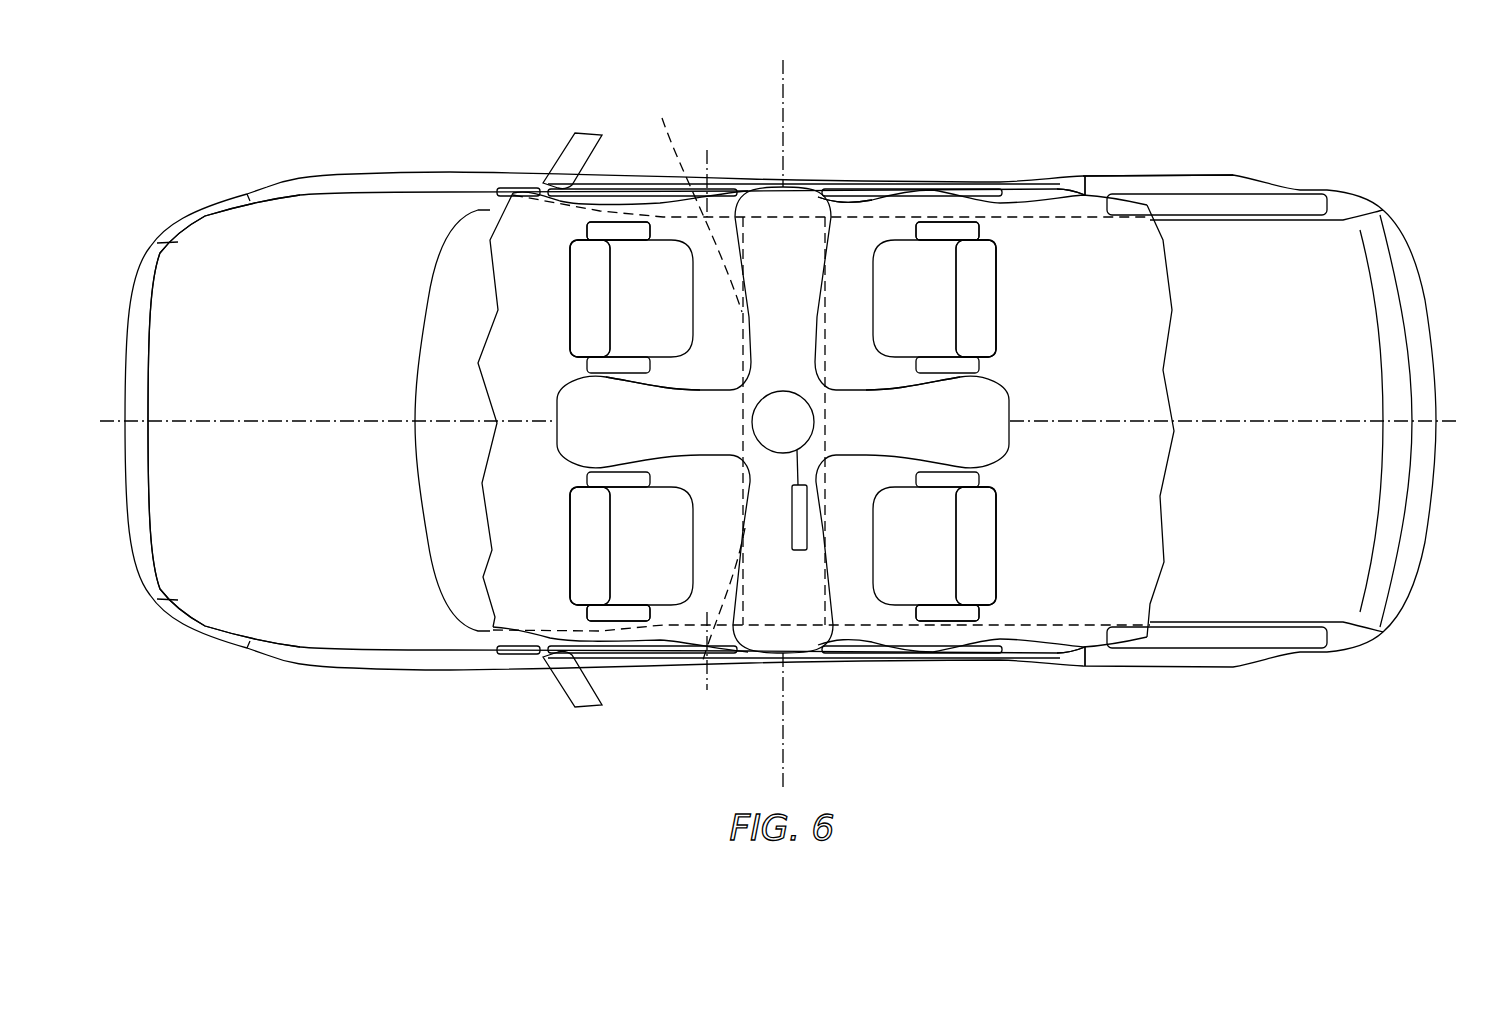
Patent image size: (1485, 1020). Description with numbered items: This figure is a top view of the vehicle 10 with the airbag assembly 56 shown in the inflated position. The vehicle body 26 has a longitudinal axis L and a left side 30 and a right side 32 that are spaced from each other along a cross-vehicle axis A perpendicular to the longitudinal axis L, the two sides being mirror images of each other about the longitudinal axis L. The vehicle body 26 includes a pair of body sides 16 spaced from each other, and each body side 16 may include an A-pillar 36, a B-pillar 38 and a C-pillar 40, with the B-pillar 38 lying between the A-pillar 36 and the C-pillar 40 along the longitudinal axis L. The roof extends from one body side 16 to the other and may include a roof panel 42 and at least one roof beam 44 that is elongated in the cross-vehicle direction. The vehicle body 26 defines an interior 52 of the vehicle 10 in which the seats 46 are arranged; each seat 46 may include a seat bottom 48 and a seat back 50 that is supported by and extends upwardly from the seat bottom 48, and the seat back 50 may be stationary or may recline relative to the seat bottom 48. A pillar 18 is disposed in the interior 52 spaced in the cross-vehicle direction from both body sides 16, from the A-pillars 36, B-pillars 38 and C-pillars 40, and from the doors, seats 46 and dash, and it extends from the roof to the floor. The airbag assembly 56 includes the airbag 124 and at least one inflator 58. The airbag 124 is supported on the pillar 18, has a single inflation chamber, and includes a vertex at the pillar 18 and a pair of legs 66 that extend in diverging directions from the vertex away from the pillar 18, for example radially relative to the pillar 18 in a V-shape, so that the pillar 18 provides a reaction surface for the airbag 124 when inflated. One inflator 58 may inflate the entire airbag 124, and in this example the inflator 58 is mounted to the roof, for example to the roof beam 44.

The vehicle 10 is at (391, 146).
The body sides 16 is at (778, 185).
The pillar 18 is at (815, 402).
The vehicle body 26 is at (1115, 174).
The left side 30 is at (282, 573).
The right side 32 is at (282, 269).
The A-pillar 36 is at (507, 188).
The B-pillar 38 is at (812, 188).
The C-pillar 40 is at (1094, 190).
The roof panel 42 is at (697, 377).
The roof beam 44 is at (706, 409).
The seat 46 is at (564, 286).
The seat bottom 48 is at (661, 240).
The seat back 50 is at (570, 324).
The interior 52 is at (842, 572).
The airbag assembly 56 is at (842, 271).
The inflator 58 is at (808, 510).
The legs 66 is at (785, 237).
The airbag 124 is at (833, 215).
The longitudinal axis L is at (235, 420).
The cross-vehicle axis A is at (781, 410).